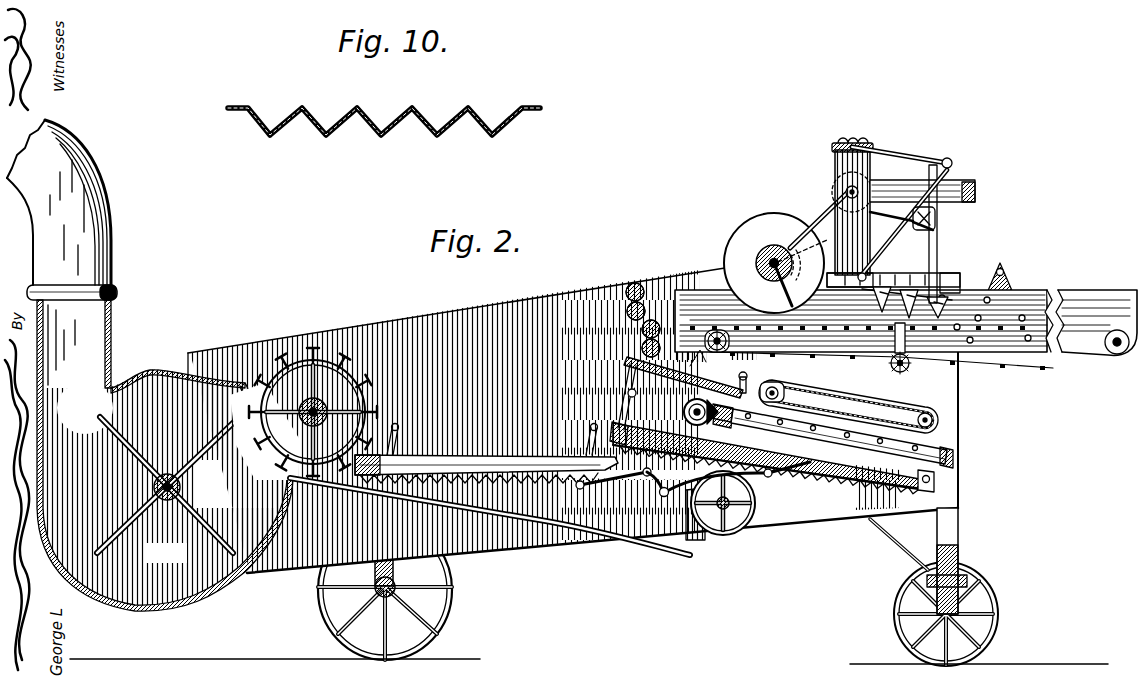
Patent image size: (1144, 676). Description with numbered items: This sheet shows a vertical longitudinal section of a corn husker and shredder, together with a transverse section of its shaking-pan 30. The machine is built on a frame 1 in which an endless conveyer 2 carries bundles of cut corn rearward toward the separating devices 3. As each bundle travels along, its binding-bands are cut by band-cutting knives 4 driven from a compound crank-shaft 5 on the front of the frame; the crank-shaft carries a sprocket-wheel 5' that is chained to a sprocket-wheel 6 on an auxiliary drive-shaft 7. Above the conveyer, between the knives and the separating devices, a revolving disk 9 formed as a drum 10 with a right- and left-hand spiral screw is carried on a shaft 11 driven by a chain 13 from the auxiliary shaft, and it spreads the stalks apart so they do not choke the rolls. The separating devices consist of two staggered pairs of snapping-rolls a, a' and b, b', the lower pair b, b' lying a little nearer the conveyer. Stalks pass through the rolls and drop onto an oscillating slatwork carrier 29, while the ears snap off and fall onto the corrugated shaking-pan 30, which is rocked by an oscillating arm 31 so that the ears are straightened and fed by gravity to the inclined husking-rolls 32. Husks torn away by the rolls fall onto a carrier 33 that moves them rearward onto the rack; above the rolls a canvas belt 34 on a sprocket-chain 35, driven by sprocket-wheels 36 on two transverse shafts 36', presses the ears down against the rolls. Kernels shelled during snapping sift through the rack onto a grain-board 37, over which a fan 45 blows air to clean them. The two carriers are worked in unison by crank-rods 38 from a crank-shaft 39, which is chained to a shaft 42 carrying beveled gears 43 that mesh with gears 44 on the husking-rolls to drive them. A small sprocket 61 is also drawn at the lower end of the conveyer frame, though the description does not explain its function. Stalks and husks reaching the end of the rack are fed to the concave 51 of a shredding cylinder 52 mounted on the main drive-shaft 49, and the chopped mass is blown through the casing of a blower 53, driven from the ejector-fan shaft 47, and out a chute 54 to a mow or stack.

In FIG. 2, the frame 1 is at (518, 353).
In FIG. 2, the endless conveyer 2 is at (944, 331).
In FIG. 2, the separating devices 3 is at (645, 320).
In FIG. 2, the band-cutting knives 4 is at (884, 293).
In FIG. 2, the compound crank-shaft 5 is at (922, 225).
In FIG. 2, the sprocket-wheel 5' is at (915, 241).
In FIG. 2, the sprocket-wheel 6 is at (854, 212).
In FIG. 2, the auxiliary drive-shaft 7 is at (843, 187).
In FIG. 2, the revolving disk 9 is at (754, 232).
In FIG. 2, the drum 10 is at (757, 261).
In FIG. 2, the shaft 11 is at (774, 250).
In FIG. 2, the chain 13 is at (834, 193).
In FIG. 2, the oscillating carrier 29 is at (518, 470).
In FIG. 10, the shaking-pan 30 is at (372, 126).
In FIG. 2, the shaking-pan 30 is at (694, 350).
In FIG. 2, the rocking arm 31 is at (629, 378).
In FIG. 2, the husking-rolls 32 is at (900, 446).
In FIG. 2, the carrier 33 is at (853, 470).
In FIG. 2, the canvas belt 34 is at (848, 402).
In FIG. 2, the sprocket-chain 35 is at (848, 406).
In FIG. 2, the sprocket-wheels 36 is at (838, 395).
In FIG. 2, the transverse shafts 36' is at (894, 394).
In FIG. 2, the grain-board 37 is at (562, 522).
In FIG. 2, the crank-rods 38 is at (604, 488).
In FIG. 2, the crank-shaft 39 is at (661, 495).
In FIG. 2, the shaft 42 is at (684, 413).
In FIG. 2, the beveled gears 43 is at (689, 418).
In FIG. 2, the gears 44 is at (712, 422).
In FIG. 2, the fan 45 is at (731, 534).
In FIG. 2, the ejector-fan shaft 47 is at (181, 490).
In FIG. 2, the main drive-shaft 49 is at (322, 412).
In FIG. 2, the concave 51 is at (289, 481).
In FIG. 2, the shredding cylinder 52 is at (262, 453).
In FIG. 2, the blower 53 is at (165, 455).
In FIG. 2, the chute 54 is at (93, 213).
In FIG. 2, the sprocket 61 is at (714, 351).
In FIG. 2, the snapping-roll a is at (624, 292).
In FIG. 2, the snapping-roll a' is at (623, 311).
In FIG. 2, the snapping-roll b is at (629, 329).
In FIG. 2, the snapping-roll b' is at (628, 348).